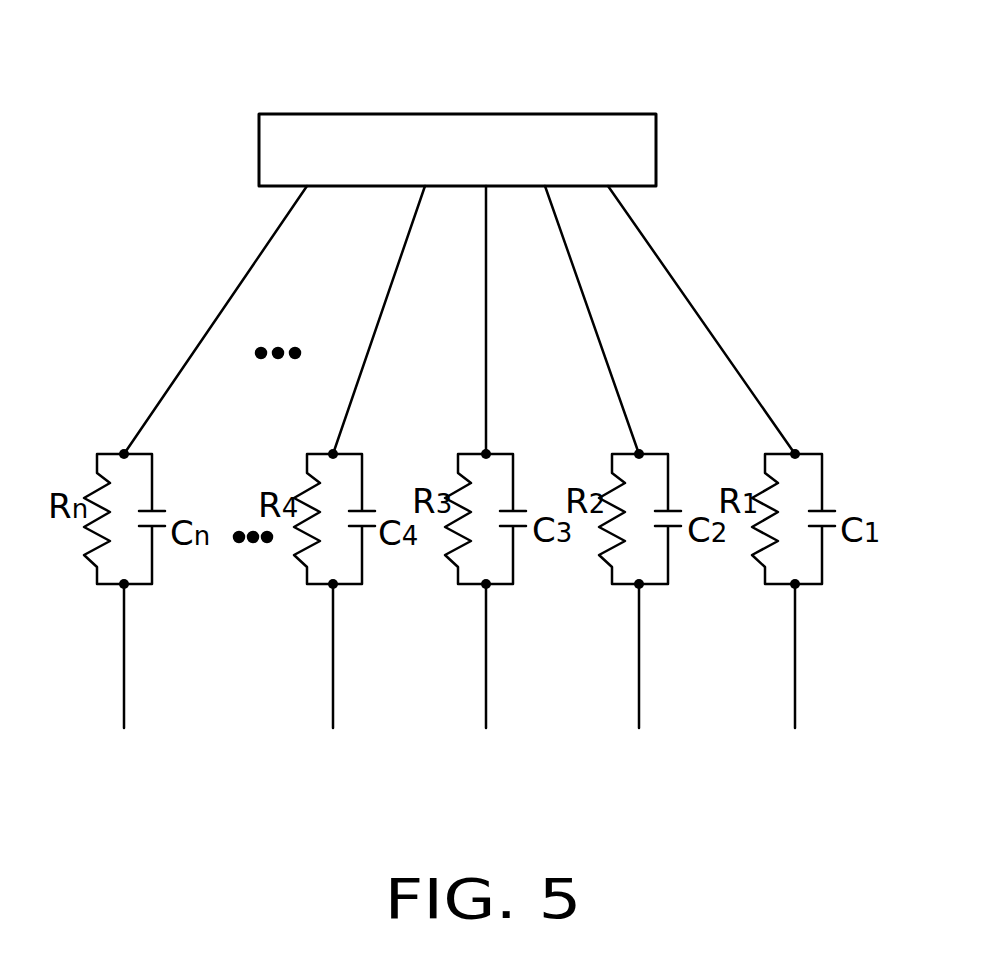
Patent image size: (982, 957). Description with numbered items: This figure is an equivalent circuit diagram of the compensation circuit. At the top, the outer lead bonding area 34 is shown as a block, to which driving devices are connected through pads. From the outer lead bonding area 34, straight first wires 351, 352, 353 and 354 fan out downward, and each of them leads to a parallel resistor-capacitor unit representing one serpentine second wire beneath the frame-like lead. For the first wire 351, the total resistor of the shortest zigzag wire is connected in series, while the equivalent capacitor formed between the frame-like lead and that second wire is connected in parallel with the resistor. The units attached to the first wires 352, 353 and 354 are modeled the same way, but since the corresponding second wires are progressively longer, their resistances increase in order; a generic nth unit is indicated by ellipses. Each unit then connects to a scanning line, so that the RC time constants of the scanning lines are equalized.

The outer lead bonding area 34 is at (422, 140).
The first wire 351 is at (727, 355).
The first wire 352 is at (605, 355).
The first wire 353 is at (486, 355).
The first wire 354 is at (367, 360).